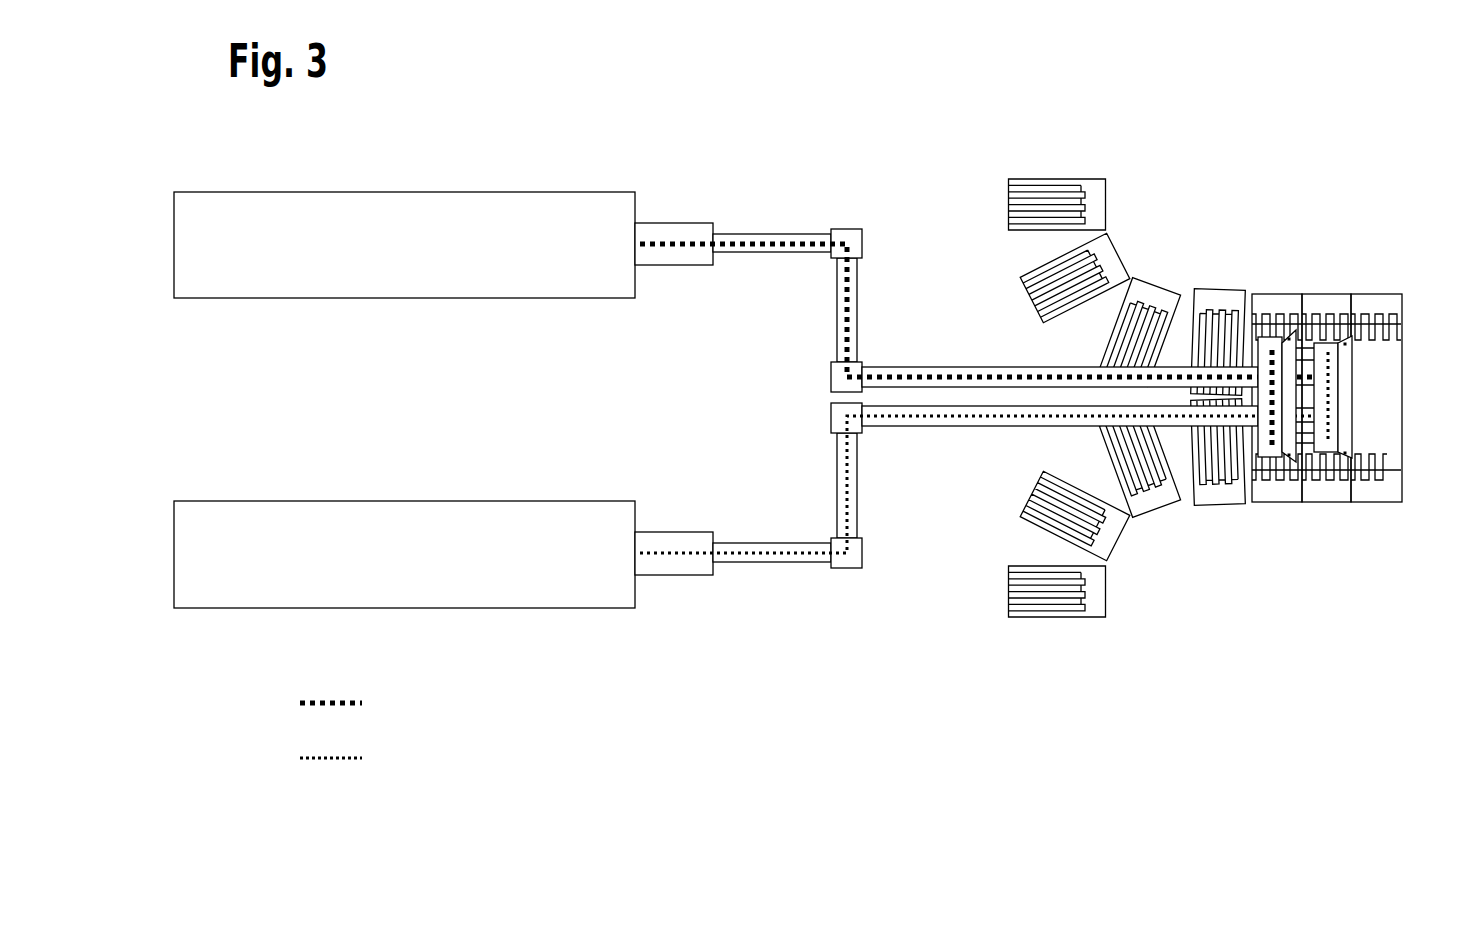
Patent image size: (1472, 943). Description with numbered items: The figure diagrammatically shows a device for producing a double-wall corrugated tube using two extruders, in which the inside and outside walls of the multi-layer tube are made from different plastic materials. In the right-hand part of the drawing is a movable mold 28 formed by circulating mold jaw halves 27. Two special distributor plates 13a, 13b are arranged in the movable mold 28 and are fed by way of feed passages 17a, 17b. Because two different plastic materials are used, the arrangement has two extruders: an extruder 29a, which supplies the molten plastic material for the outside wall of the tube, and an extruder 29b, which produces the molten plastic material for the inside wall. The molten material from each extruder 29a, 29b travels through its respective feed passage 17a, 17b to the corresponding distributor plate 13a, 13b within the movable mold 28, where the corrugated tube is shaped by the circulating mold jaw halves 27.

The distributor plate 13a is at (1290, 377).
The distributor plate 13b is at (1348, 370).
The feed passage 17a is at (942, 367).
The feed passage 17b is at (942, 426).
The mold jaw halves 27 is at (1157, 497).
The movable mold 28 is at (1206, 389).
The extruder 29a is at (433, 218).
The extruder 29b is at (433, 527).